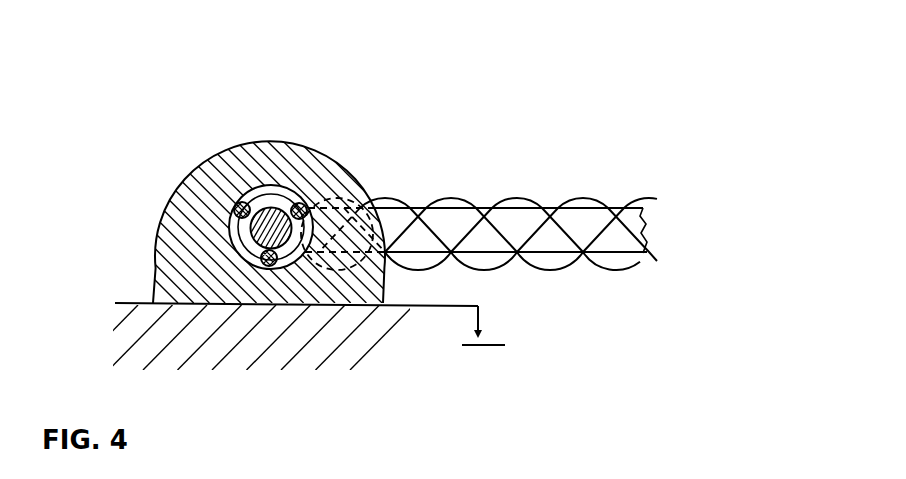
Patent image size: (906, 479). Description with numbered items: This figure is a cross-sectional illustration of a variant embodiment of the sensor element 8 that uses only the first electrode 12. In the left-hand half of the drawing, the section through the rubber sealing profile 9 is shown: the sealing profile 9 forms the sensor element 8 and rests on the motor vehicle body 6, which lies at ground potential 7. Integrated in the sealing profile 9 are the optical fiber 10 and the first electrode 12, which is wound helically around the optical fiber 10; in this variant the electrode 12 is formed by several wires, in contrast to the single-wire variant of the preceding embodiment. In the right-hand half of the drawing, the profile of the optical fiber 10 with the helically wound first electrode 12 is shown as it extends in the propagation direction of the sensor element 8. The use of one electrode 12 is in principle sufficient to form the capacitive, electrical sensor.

The motor vehicle body 6 is at (332, 350).
The ground potential 7 is at (507, 328).
The sensor element 8 is at (336, 134).
The rubber sealing profile 9 is at (222, 173).
The optical fiber 10 is at (182, 200).
The first electrode 12 is at (242, 203).